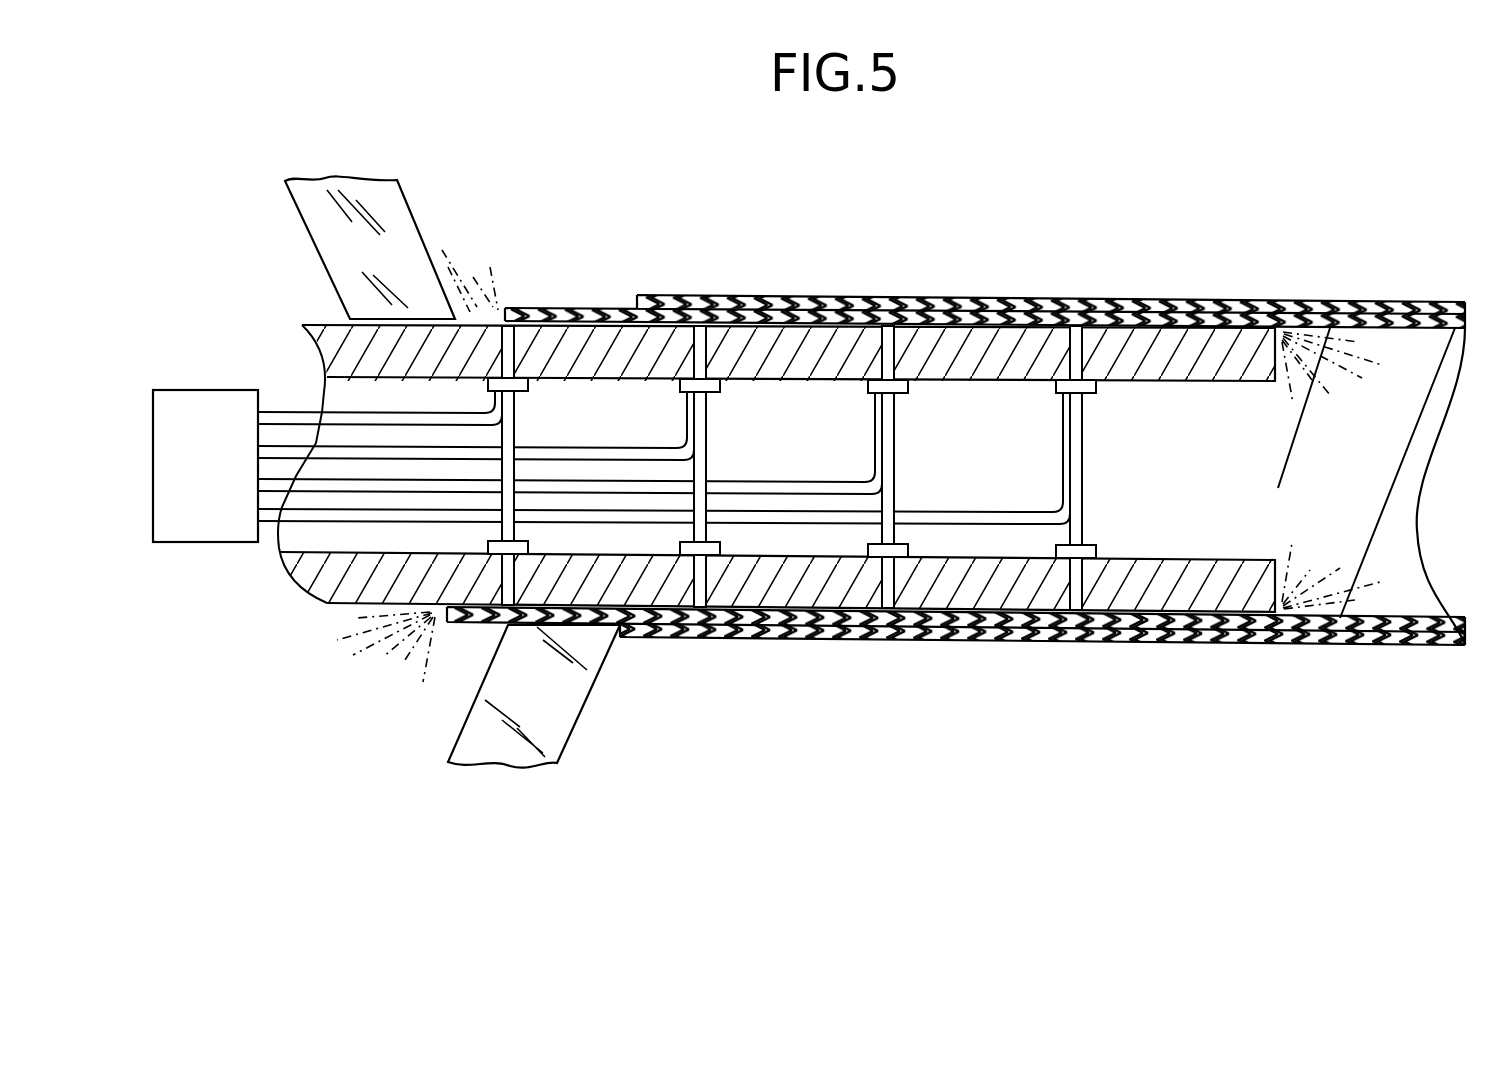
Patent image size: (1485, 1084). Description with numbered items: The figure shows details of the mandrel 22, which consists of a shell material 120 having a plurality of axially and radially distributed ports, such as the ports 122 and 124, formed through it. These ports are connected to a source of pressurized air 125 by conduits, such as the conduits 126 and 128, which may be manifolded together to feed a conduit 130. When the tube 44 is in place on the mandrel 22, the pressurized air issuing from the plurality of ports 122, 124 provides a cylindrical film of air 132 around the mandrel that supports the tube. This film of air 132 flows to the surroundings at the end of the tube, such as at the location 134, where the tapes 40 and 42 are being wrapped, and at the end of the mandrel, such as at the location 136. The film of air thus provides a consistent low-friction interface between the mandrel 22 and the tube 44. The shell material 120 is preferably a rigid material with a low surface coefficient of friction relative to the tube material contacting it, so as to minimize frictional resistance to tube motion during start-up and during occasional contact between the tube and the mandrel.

The mandrel 22 is at (330, 603).
The tape 40 is at (560, 730).
The tape 42 is at (397, 203).
The tube 44 is at (688, 297).
The shell material 120 is at (1207, 352).
The port 122 is at (1077, 347).
The port 124 is at (1077, 587).
The source of pressurized air 125 is at (214, 543).
The conduit 126 is at (1067, 418).
The conduit 128 is at (1062, 538).
The conduit 130 is at (962, 530).
The film of air 132 is at (708, 632).
The end of the tube 134 is at (400, 627).
The end of the mandrel 136 is at (1320, 612).